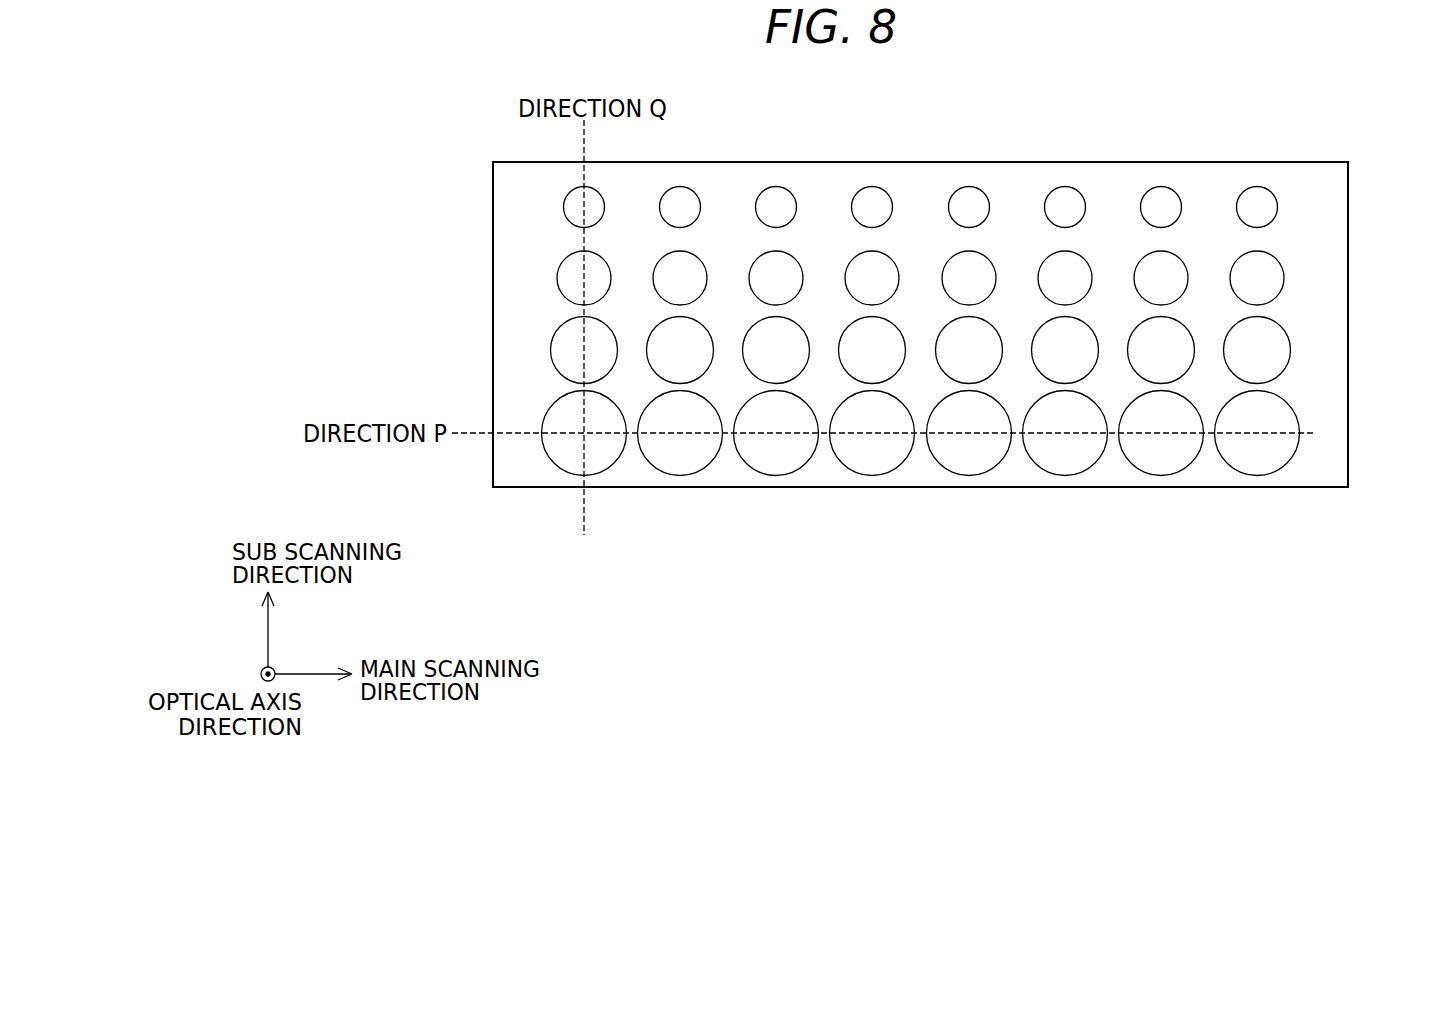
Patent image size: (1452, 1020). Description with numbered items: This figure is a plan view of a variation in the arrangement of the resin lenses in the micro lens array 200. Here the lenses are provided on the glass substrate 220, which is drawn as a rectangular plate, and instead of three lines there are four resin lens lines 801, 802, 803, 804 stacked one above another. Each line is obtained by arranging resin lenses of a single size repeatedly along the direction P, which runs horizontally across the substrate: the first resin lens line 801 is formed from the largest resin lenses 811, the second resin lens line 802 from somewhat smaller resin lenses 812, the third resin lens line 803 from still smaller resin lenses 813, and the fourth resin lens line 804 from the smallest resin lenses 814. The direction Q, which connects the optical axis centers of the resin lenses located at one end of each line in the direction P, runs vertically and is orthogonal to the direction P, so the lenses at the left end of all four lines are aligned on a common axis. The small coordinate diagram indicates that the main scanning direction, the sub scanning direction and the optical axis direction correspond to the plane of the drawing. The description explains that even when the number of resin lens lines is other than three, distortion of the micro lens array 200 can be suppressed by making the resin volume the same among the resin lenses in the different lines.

The micro lens array 200 is at (478, 112).
The glass substrate 220 is at (493, 208).
The resin lens line 801 is at (980, 471).
The resin lens line 802 is at (985, 249).
The resin lens line 803 is at (987, 214).
The resin lens line 804 is at (991, 177).
The resin lens 811 is at (969, 476).
The resin lens 812 is at (1042, 323).
The resin lens 813 is at (1148, 255).
The resin lens 814 is at (1255, 187).